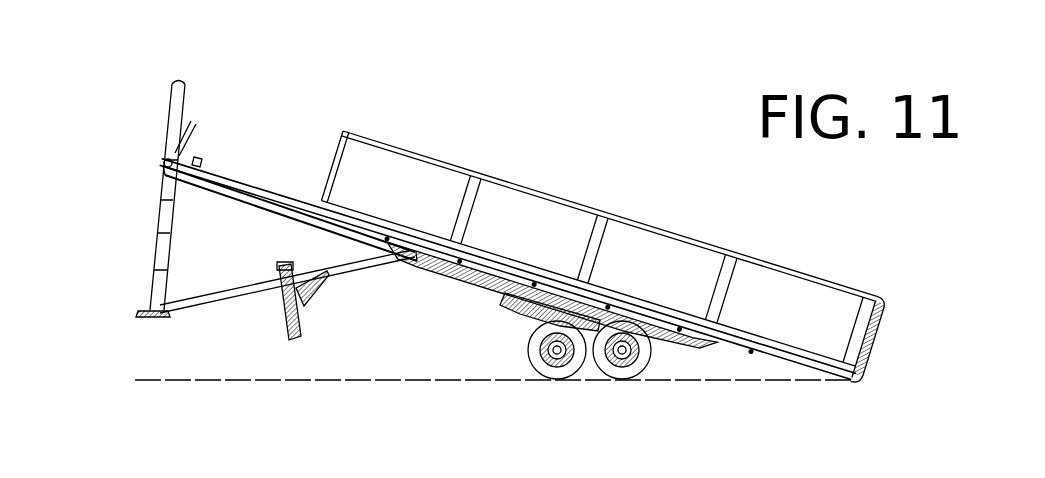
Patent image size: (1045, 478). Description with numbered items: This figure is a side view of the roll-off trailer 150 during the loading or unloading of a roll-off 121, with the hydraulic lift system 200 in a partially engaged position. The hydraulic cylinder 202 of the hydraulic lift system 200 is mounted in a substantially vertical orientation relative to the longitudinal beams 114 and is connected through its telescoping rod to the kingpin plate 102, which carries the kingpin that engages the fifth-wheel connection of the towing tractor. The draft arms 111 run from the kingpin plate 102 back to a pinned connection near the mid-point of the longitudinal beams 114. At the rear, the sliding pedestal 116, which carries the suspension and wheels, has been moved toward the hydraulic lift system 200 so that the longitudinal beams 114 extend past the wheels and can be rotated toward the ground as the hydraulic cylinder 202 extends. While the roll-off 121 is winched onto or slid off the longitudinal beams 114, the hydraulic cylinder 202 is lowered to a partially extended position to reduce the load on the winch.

The hydraulic lift system 200 is at (151, 179).
The hydraulic cylinder 202 is at (184, 104).
The kingpin plate 102 is at (146, 311).
The draft arms 111 is at (178, 303).
The longitudinal beams 114 is at (250, 193).
The sliding pedestal 116 is at (528, 302).
The roll-off 121 is at (660, 252).
The roll-off trailer 150 is at (579, 328).